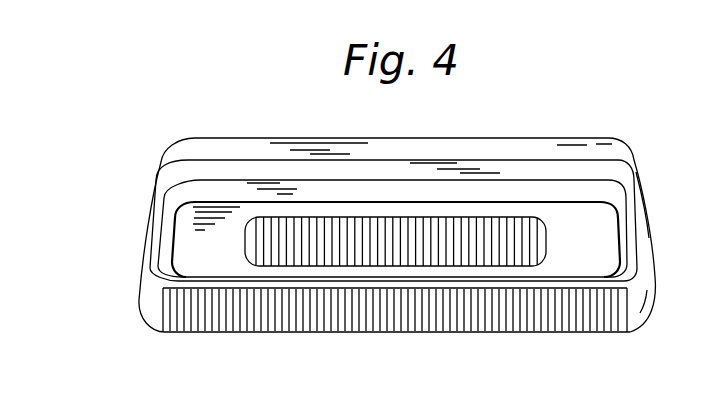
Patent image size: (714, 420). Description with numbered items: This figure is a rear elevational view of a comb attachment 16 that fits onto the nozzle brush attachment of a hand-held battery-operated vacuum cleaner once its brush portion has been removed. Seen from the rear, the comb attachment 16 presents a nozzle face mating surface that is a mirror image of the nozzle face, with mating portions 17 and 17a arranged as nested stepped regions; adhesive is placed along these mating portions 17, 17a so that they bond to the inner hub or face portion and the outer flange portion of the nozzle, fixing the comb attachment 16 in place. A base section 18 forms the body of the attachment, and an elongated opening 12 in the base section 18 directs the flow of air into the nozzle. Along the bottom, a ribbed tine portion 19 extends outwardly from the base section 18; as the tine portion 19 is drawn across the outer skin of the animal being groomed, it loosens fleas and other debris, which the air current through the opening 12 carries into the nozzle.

The opening 12 is at (553, 237).
The comb attachment 16 is at (147, 202).
The mating portion 17 is at (231, 190).
The mating portion 17a is at (255, 167).
The base section 18 is at (545, 147).
The tine portion 19 is at (242, 332).